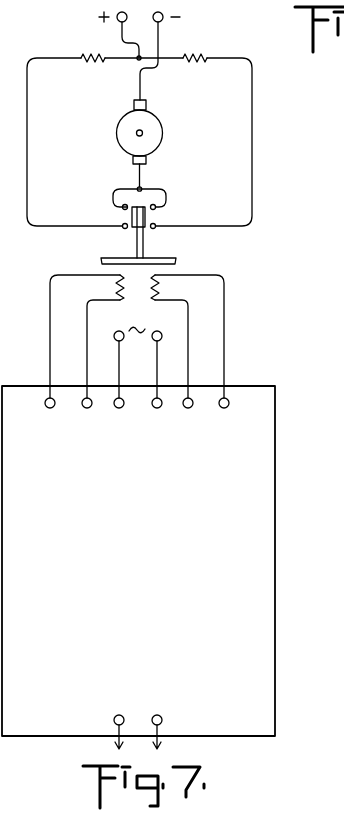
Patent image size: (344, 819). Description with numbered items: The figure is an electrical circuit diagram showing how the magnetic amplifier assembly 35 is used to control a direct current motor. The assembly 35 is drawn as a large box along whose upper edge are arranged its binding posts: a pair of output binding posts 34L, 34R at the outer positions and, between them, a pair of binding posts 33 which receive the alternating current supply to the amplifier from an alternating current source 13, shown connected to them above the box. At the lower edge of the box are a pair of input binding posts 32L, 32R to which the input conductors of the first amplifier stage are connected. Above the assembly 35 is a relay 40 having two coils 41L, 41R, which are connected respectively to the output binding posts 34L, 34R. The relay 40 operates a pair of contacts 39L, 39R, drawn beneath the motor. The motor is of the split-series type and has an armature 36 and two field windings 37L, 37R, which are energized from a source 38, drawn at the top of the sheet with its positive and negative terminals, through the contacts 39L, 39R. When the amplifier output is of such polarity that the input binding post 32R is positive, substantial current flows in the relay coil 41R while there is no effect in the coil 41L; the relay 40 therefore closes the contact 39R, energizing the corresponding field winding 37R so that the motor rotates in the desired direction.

The source 38 is at (139, 50).
The field winding 37L is at (91, 71).
The field winding 37R is at (194, 71).
The armature 36 is at (150, 143).
The contact 39L is at (99, 217).
The contact 39R is at (175, 217).
The relay 40 is at (190, 252).
The coil 41L is at (87, 336).
The coil 41R is at (187, 336).
The alternating current source 13 is at (138, 353).
The binding post 34L is at (68, 415).
The binding posts 33 is at (138, 415).
The binding post 34R is at (206, 415).
The magnetic amplifier assembly 35 is at (306, 433).
The input binding post 32L is at (93, 727).
The input binding post 32R is at (176, 727).